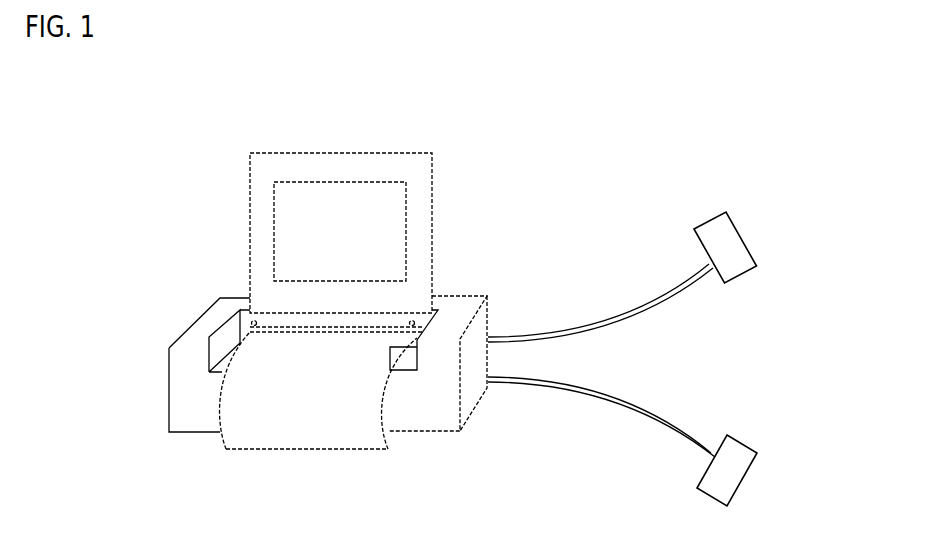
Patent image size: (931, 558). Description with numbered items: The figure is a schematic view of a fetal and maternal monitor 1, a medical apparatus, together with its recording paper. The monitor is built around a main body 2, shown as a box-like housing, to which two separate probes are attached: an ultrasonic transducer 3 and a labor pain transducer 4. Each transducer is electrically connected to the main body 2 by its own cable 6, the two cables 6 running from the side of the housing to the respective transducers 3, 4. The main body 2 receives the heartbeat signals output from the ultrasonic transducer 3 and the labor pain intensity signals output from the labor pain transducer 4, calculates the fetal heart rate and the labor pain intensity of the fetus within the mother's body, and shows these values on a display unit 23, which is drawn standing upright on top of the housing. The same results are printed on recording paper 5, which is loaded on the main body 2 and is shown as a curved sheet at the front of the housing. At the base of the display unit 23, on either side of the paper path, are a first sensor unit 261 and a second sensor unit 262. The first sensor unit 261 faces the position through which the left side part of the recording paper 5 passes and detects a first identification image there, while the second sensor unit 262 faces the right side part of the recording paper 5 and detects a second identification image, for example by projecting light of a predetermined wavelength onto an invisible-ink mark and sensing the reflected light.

The fetal and maternal monitor 1 is at (590, 178).
The main body 2 is at (462, 432).
The display unit 23 is at (318, 187).
The first sensor unit 261 is at (240, 297).
The second sensor unit 262 is at (420, 306).
The recording paper 5 is at (263, 435).
The cables 6 is at (598, 323).
The ultrasonic transducer 3 is at (729, 245).
The labor pain transducer 4 is at (743, 452).